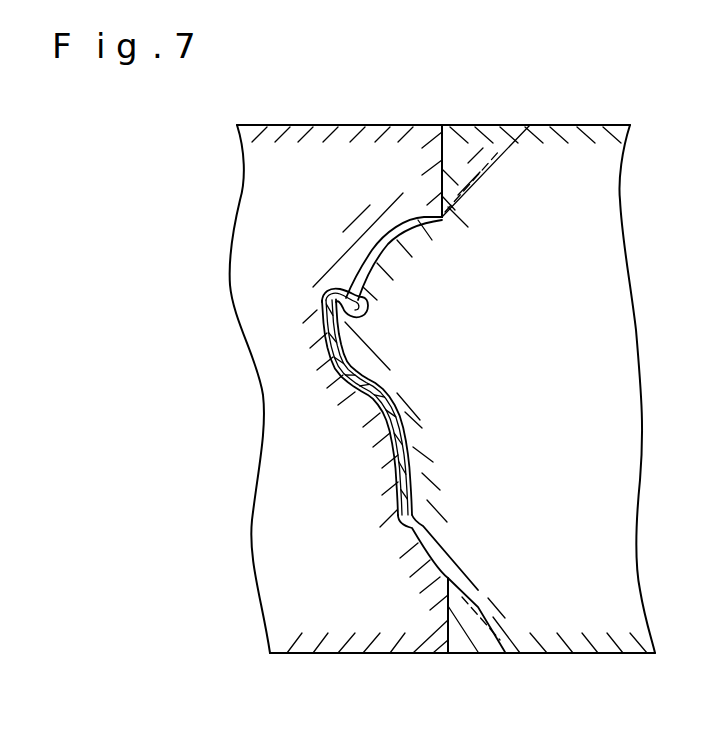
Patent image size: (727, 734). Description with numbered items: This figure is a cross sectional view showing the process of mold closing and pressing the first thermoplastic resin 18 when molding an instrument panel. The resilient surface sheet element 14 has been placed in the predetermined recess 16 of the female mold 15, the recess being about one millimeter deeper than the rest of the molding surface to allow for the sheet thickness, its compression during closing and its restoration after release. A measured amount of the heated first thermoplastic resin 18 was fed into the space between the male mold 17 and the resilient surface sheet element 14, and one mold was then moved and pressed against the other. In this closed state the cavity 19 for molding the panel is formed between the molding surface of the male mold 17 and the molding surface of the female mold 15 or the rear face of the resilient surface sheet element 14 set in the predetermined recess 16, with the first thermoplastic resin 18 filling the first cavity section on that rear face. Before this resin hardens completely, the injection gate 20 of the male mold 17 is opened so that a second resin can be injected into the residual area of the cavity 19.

The resilient surface sheet element 14 is at (320, 320).
The female mold 15 is at (393, 142).
The predetermined recess 16 is at (372, 387).
The male mold 17 is at (563, 125).
The first thermoplastic resin 18 is at (390, 385).
The cavity 19 is at (417, 222).
The injection gate 20 is at (497, 163).